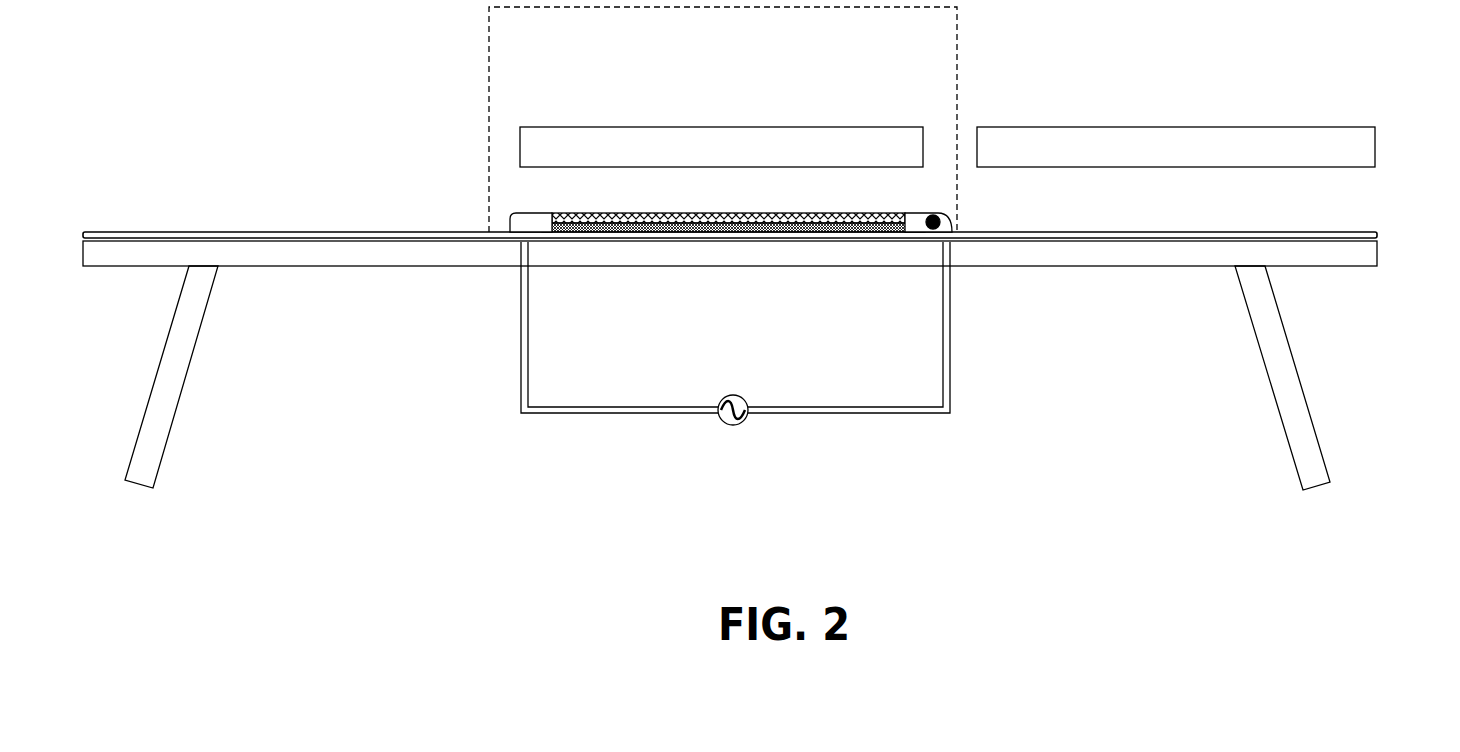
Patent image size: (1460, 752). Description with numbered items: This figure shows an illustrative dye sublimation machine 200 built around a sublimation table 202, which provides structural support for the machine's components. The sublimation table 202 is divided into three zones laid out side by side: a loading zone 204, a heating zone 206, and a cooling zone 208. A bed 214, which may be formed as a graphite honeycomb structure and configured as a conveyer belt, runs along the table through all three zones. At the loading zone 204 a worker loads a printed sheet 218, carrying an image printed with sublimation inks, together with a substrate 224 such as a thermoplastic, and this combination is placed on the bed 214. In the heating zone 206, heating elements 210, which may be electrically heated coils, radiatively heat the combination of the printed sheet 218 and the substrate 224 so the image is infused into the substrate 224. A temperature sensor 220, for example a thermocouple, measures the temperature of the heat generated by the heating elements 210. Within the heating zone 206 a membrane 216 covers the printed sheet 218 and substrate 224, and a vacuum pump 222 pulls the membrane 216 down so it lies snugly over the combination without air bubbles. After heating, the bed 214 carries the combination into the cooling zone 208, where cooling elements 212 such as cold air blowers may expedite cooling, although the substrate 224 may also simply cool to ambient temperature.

The dye sublimation machine 200 is at (783, 567).
The sublimation table 202 is at (1380, 252).
The loading zone 204 is at (353, 86).
The heating zone 206 is at (723, 119).
The cooling zone 208 is at (1147, 77).
The heating elements 210 is at (721, 147).
The cooling elements 212 is at (1176, 147).
The bed 214 is at (1288, 232).
The membrane 216 is at (535, 212).
The printed sheet 218 is at (603, 213).
The temperature sensor 220 is at (930, 216).
The vacuum pump 222 is at (741, 398).
The substrate 224 is at (540, 227).